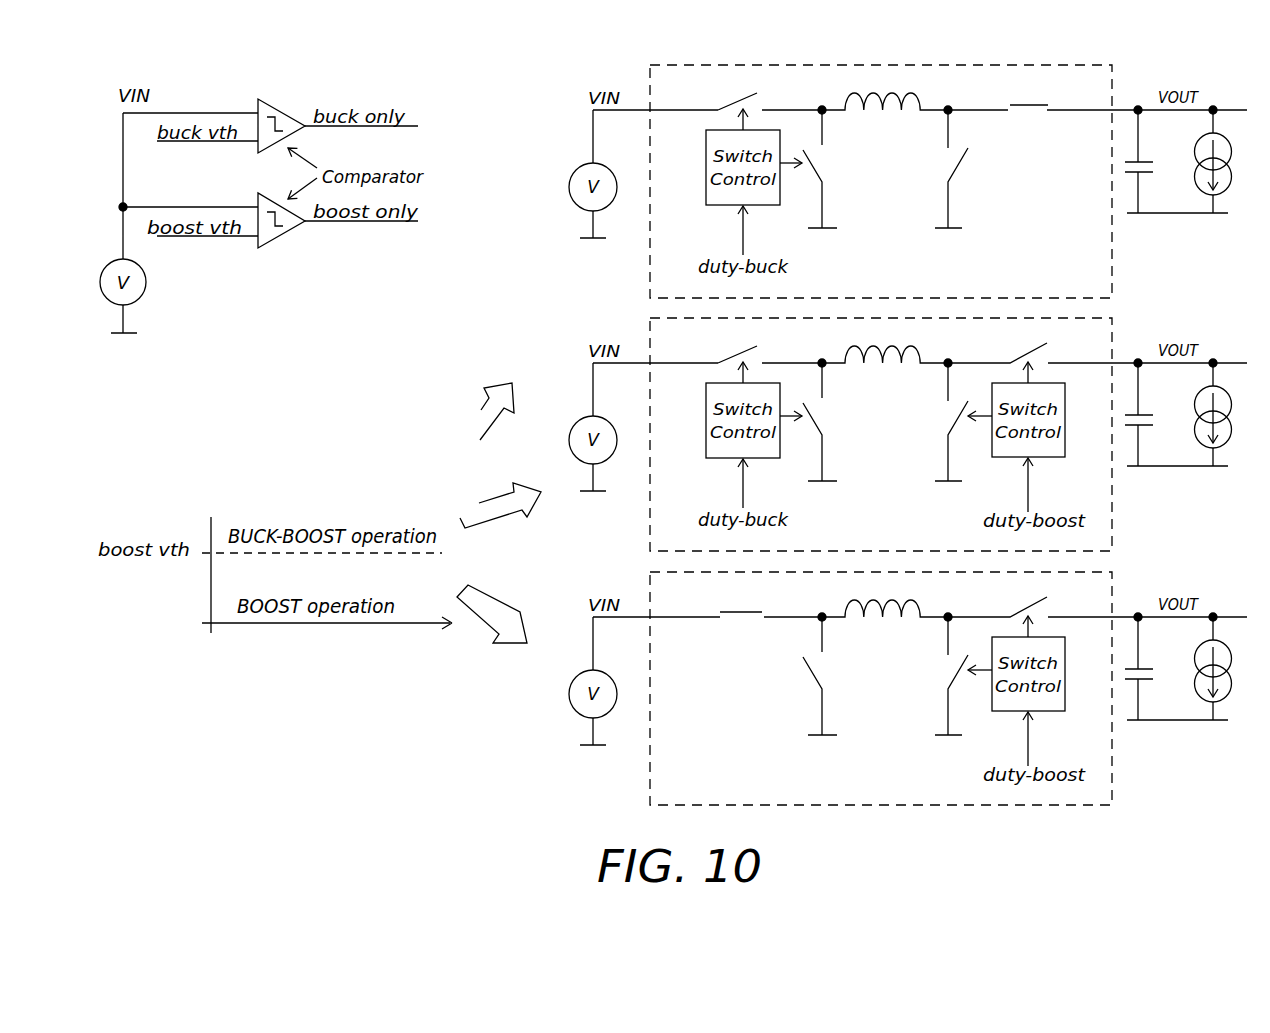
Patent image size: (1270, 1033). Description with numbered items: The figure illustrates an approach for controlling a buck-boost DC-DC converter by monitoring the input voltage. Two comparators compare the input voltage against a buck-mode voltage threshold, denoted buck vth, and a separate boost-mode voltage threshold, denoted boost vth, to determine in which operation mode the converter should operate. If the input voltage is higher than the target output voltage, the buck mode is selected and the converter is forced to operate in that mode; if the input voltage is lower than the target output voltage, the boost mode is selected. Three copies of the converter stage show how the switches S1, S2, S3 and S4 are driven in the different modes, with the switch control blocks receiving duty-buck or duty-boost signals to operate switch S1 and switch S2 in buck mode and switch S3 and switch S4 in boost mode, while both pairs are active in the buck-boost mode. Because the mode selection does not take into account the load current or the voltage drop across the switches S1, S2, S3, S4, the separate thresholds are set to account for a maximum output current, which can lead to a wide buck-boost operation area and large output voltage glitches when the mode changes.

The first switch (buck high-side switch) S1 is at (770, 346).
The second switch (buck low-side switch) S2 is at (825, 422).
The third switch (boost low-side switch) S3 is at (946, 422).
The fourth switch (boost high-side switch) S4 is at (1043, 351).